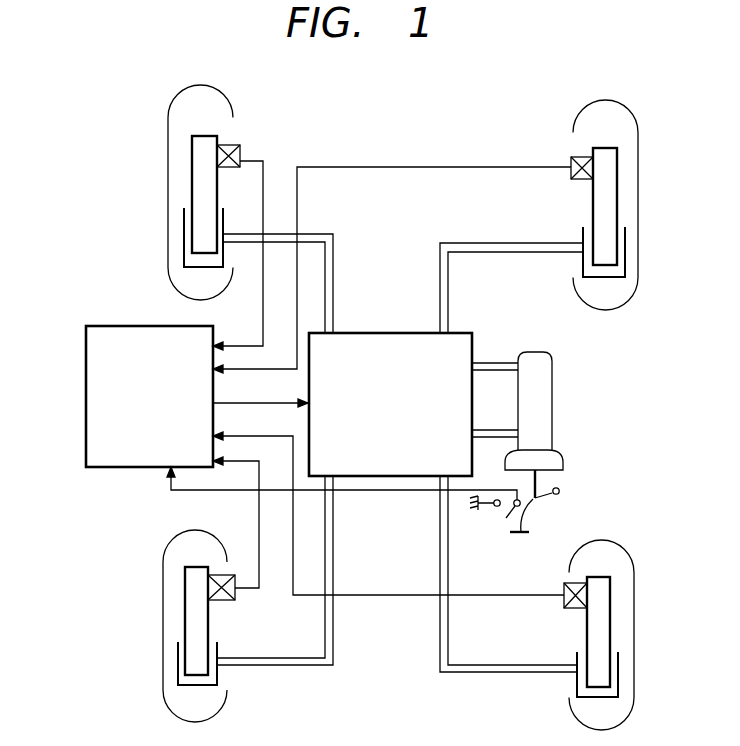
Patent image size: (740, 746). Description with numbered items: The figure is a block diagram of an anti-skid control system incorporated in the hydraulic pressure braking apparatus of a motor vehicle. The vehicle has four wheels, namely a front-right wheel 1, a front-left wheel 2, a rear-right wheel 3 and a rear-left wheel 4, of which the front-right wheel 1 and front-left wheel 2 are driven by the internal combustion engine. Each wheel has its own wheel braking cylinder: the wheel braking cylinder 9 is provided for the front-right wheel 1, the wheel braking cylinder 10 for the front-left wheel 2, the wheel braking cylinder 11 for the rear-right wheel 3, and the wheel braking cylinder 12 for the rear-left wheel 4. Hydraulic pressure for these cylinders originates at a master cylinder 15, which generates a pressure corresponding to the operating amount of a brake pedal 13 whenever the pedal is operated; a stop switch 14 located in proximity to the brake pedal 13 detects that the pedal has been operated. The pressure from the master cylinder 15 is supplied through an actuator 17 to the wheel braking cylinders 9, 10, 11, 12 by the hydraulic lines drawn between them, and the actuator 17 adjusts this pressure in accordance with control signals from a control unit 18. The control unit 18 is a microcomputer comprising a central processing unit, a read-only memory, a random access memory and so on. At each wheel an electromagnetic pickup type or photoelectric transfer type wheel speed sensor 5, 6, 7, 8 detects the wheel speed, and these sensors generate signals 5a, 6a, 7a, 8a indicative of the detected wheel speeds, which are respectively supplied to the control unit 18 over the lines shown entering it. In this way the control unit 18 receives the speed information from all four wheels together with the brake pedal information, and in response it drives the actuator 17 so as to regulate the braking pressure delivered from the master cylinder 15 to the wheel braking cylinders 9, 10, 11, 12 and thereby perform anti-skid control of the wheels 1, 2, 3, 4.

The front-right wheel 1 is at (638, 165).
The front-left wheel 2 is at (168, 160).
The rear-right wheel 3 is at (634, 626).
The rear-left wheel 4 is at (163, 567).
The wheel speed sensor 5 is at (573, 157).
The wheel speed sensor 6 is at (232, 145).
The wheel speed sensor 7 is at (570, 583).
The wheel speed sensor 8 is at (225, 600).
The wheel speed signal 5a is at (524, 167).
The wheel speed signal 6a is at (263, 172).
The wheel speed signal 7a is at (530, 596).
The wheel speed signal 8a is at (259, 522).
The wheel braking cylinder 9 is at (625, 258).
The wheel braking cylinder 10 is at (184, 230).
The wheel braking cylinder 11 is at (577, 680).
The wheel braking cylinder 12 is at (178, 672).
The brake pedal 13 is at (526, 515).
The stop switch 14 is at (497, 510).
The master cylinder 15 is at (552, 392).
The actuator 17 is at (465, 357).
The control unit 18 is at (86, 362).